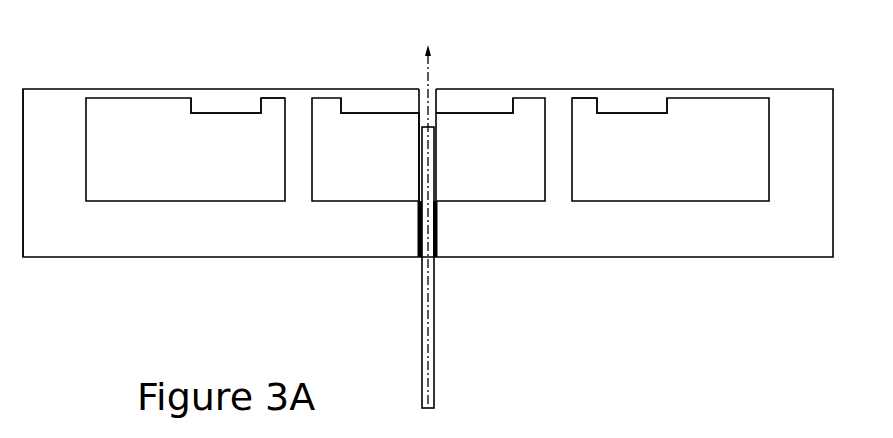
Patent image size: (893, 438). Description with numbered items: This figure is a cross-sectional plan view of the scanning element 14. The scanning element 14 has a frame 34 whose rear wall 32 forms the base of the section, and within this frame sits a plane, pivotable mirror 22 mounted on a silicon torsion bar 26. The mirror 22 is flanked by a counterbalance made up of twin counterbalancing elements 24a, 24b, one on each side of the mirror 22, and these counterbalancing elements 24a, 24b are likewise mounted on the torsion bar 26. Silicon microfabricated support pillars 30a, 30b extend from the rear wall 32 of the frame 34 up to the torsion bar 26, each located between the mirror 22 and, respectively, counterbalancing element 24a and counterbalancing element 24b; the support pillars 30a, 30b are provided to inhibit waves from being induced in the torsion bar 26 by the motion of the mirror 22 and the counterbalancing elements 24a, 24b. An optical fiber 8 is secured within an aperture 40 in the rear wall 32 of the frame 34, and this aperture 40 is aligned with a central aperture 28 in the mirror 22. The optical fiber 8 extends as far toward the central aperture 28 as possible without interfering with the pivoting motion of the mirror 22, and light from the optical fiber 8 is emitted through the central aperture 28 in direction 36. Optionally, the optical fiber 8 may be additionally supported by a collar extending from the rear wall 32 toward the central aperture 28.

The optical fiber 8 is at (434, 345).
The scanning element 14 is at (55, 259).
The pivotable mirror 22 is at (475, 89).
The counterbalancing element 24a is at (617, 89).
The counterbalancing element 24b is at (227, 89).
The torsion bar 26 is at (154, 89).
The central aperture 28 is at (416, 97).
The support pillar 30a is at (572, 178).
The support pillar 30b is at (285, 161).
The rear wall 32 is at (180, 201).
The frame 34 is at (70, 137).
The direction 36 is at (433, 60).
The aperture 40 is at (418, 230).